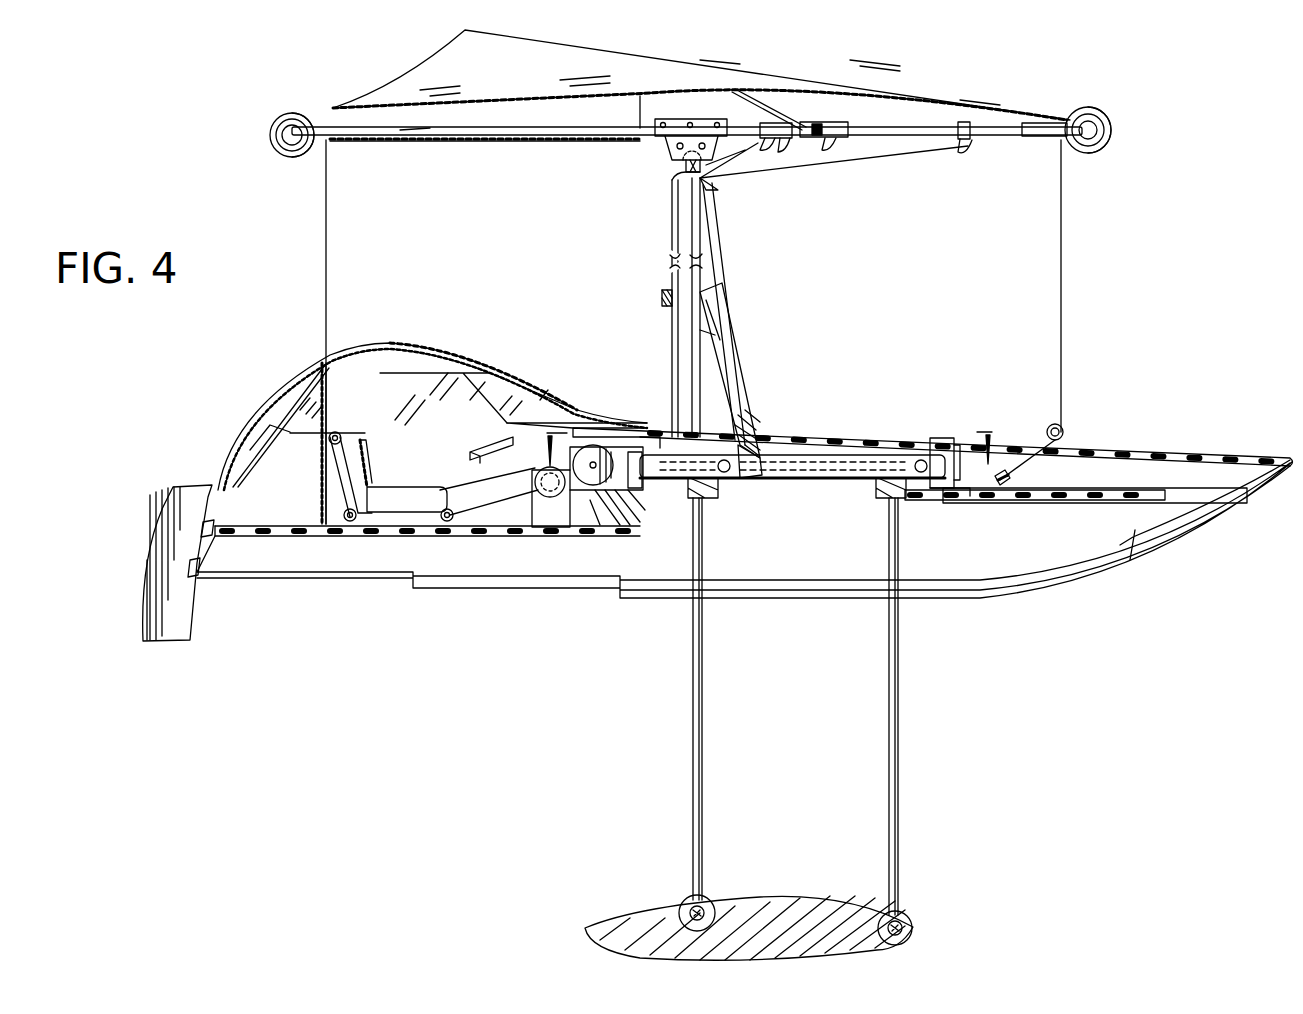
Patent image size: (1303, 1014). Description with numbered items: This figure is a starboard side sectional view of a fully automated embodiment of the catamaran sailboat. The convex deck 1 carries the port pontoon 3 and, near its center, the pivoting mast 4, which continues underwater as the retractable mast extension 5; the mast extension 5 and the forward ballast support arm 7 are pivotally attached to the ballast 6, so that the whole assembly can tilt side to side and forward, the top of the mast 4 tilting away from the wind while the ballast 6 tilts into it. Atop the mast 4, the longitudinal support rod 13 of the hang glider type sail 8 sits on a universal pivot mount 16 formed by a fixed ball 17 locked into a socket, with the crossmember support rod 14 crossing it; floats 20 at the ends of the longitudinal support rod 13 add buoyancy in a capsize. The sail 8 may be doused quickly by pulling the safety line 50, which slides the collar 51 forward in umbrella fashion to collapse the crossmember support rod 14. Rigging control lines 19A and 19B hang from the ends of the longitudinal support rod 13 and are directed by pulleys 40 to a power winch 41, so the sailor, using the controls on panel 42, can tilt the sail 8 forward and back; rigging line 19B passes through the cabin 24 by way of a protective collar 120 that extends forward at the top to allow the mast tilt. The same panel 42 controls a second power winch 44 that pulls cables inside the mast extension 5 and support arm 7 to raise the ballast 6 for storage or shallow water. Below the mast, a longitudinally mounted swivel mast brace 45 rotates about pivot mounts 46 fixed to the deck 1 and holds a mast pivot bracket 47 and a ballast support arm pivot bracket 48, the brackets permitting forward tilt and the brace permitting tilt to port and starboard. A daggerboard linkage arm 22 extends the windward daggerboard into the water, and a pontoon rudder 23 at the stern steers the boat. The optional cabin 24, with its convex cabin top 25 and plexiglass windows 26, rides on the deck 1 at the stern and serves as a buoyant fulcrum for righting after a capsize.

The convex deck 1 is at (1183, 445).
The port pontoon 3 is at (1215, 512).
The pivoting mast 4 is at (675, 255).
The mast extension 5 is at (692, 730).
The ballast 6 is at (785, 897).
The forward ballast support arm 7 is at (888, 728).
The hang glider type sail 8 is at (735, 80).
The longitudinal support rod 13 is at (558, 134).
The crossmember support rod 14 is at (775, 114).
The universal pivot mount 16 is at (660, 150).
The fixed ball 17 is at (684, 170).
The rigging control line 19A is at (1066, 268).
The rigging control line 19B is at (322, 275).
The float 20 is at (285, 113).
The daggerboard linkage arm 22 is at (738, 385).
The pontoon rudder 23 is at (140, 585).
The cabin 24 is at (430, 345).
The cabin top 25 is at (440, 345).
The plexiglass window 26 is at (535, 385).
The pulley 40 is at (337, 432).
The power winch 41 is at (535, 483).
The control panel 42 is at (468, 455).
The power winch 44 is at (590, 452).
The swivel mast brace 45 is at (808, 480).
The pivot mount 46 is at (635, 490).
The mast pivot bracket 47 is at (712, 492).
The ballast support arm pivot bracket 48 is at (878, 492).
The safety line 50 is at (718, 248).
The collar 51 is at (835, 128).
The protective collar 120 is at (368, 365).